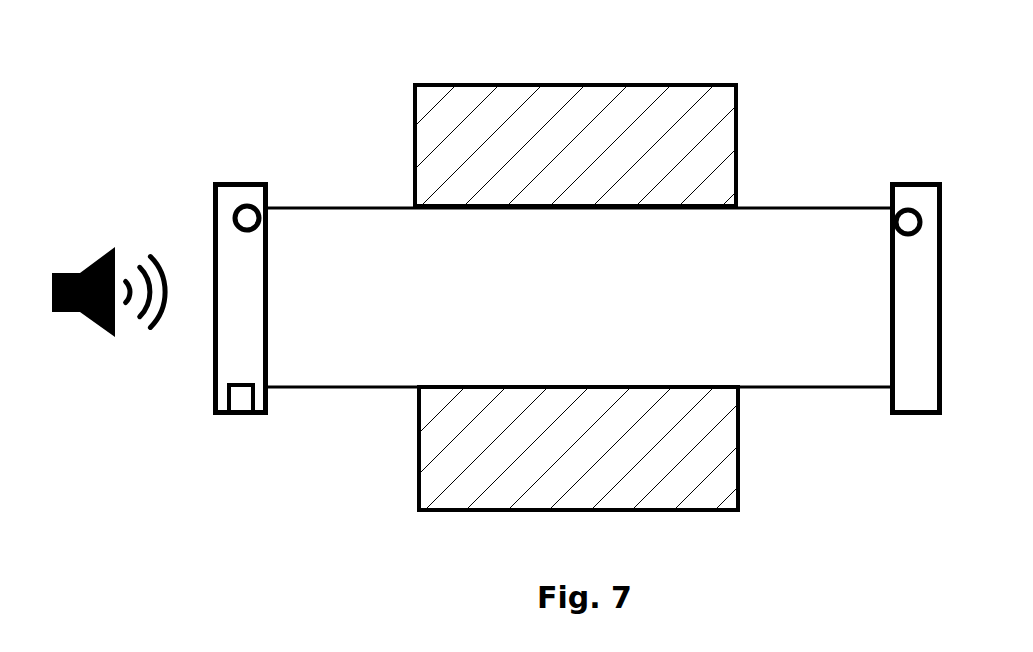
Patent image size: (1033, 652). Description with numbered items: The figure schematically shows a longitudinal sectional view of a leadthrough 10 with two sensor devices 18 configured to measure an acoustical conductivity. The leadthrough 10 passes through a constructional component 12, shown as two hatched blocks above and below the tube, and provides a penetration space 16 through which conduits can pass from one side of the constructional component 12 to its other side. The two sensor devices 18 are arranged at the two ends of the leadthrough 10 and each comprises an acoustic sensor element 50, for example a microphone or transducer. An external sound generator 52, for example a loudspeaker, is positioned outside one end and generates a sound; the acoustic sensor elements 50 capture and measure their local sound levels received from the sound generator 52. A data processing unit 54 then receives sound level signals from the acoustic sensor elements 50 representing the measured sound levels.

The leadthrough 10 is at (765, 427).
The constructional component 12 is at (637, 122).
The penetration space 16 is at (790, 302).
The sensor device 18 is at (247, 187).
The acoustic sensor element 50 is at (243, 205).
The sound generator 52 is at (102, 257).
The data processing unit 54 is at (240, 395).